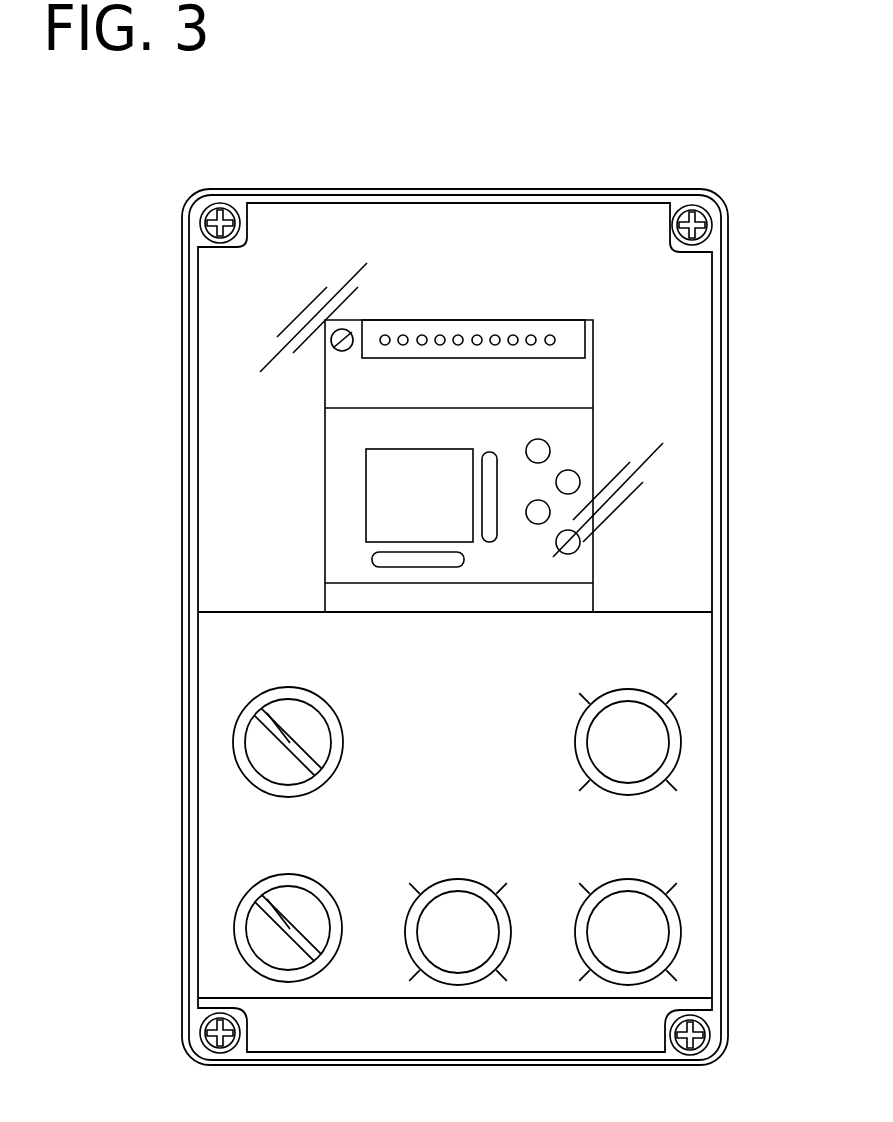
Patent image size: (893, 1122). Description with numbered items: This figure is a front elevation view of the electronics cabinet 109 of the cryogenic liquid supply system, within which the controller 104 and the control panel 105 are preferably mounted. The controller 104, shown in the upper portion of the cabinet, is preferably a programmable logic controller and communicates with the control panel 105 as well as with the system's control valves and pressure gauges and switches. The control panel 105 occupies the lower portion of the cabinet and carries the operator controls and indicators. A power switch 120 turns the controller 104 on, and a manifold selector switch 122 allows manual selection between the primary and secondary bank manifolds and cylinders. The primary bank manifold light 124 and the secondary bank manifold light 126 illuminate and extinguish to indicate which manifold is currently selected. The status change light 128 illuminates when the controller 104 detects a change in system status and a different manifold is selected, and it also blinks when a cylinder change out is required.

The controller 104 is at (593, 418).
The control panel 105 is at (215, 865).
The electronics cabinet 109 is at (185, 412).
The power switch 120 is at (236, 727).
The manifold selector switch 122 is at (310, 977).
The primary bank manifold light 124 is at (482, 980).
The secondary bank manifold light 126 is at (672, 938).
The status change light 128 is at (668, 742).